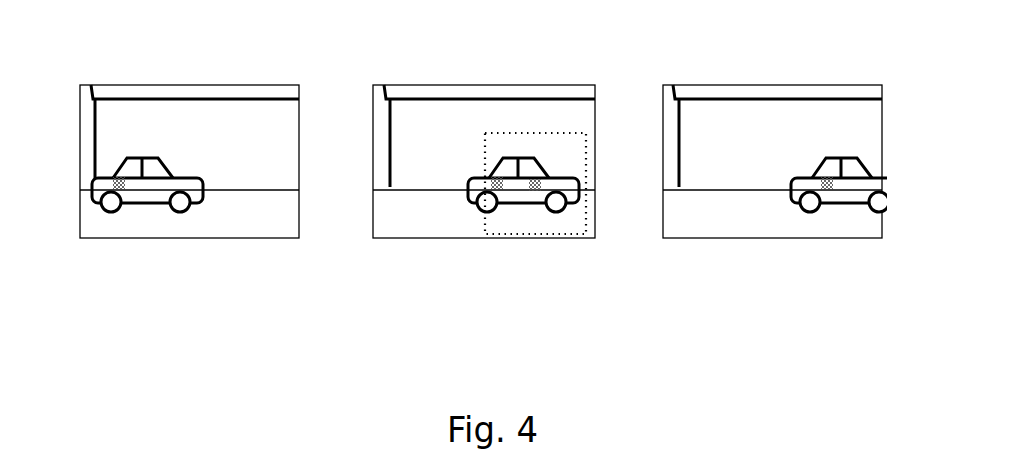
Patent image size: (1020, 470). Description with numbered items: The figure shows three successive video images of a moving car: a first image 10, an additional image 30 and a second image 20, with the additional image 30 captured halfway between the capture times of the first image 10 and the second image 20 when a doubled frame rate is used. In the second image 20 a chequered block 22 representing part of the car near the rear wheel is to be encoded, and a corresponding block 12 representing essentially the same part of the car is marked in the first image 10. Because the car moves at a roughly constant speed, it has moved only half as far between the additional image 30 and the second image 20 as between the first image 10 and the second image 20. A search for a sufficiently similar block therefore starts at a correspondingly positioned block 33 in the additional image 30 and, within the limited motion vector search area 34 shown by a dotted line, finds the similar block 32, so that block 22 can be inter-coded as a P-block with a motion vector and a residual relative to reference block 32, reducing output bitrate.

The first image 10 is at (85, 83).
The block 12 is at (120, 212).
The second image 20 is at (673, 83).
The block 22 is at (830, 202).
The additional image 30 is at (382, 83).
The similar block 32 is at (493, 212).
The correspondingly positioned block 33 is at (537, 198).
The motion vector search area 34 is at (518, 238).